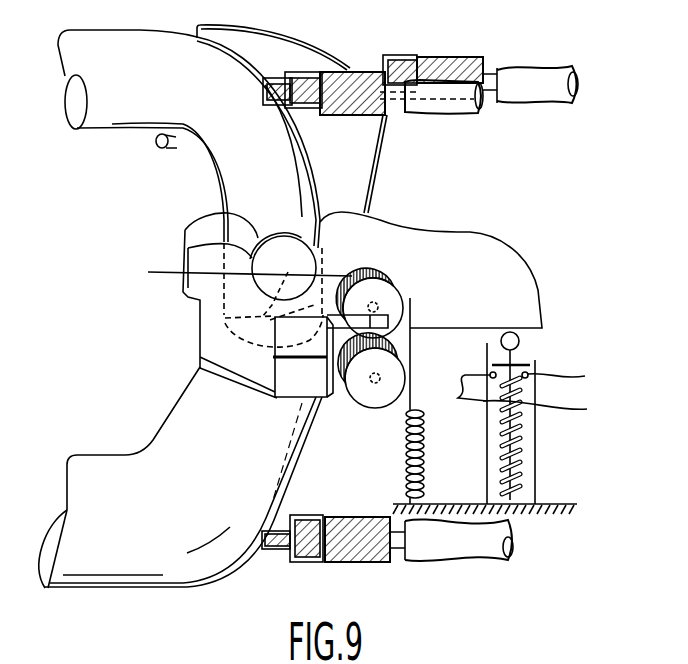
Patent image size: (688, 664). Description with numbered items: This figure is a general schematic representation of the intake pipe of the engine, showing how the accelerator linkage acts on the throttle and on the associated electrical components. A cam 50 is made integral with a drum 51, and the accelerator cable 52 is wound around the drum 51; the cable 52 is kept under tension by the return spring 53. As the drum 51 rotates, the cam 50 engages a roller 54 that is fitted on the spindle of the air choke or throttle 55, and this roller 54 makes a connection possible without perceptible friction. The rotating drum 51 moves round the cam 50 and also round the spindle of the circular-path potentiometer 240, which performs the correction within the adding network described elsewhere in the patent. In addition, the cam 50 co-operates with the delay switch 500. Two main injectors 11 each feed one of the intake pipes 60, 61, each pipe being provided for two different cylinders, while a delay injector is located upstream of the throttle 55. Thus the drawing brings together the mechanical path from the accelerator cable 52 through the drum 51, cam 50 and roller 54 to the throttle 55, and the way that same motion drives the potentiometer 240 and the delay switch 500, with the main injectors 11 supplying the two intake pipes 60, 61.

The main injector 11 is at (464, 49).
The cam 50 is at (502, 261).
The drum 51 is at (412, 292).
The accelerator cable 52 is at (152, 278).
The return spring 53 is at (405, 460).
The roller 54 is at (302, 255).
The throttle 55 is at (242, 331).
The intake pipe 60 is at (215, 590).
The intake pipe 61 is at (292, 50).
The circular-path potentiometer 240 is at (387, 386).
The delay switch 500 is at (542, 356).